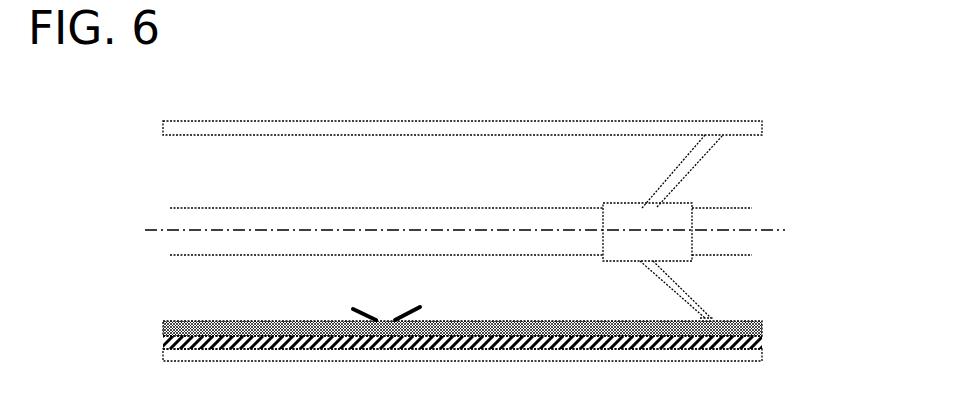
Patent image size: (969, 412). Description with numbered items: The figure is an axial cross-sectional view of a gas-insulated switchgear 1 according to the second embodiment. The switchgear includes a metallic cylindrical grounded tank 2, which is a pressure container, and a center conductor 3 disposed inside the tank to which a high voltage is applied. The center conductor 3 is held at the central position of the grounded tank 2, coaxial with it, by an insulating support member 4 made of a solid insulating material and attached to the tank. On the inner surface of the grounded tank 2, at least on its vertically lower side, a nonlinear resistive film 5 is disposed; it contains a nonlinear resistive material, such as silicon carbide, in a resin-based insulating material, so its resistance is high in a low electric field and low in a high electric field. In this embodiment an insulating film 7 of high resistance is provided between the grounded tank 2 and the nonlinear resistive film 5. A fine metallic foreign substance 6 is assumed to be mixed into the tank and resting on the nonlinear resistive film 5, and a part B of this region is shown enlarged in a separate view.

The gas-insulated switchgear 1 is at (441, 95).
The grounded tank 2 is at (625, 125).
The center conductor 3 is at (708, 213).
The insulating support member 4 is at (690, 278).
The nonlinear resistive film 5 is at (700, 319).
The fine metallic foreign substance 6 is at (352, 311).
The insulating film 7 is at (660, 348).
The part B is at (550, 347).